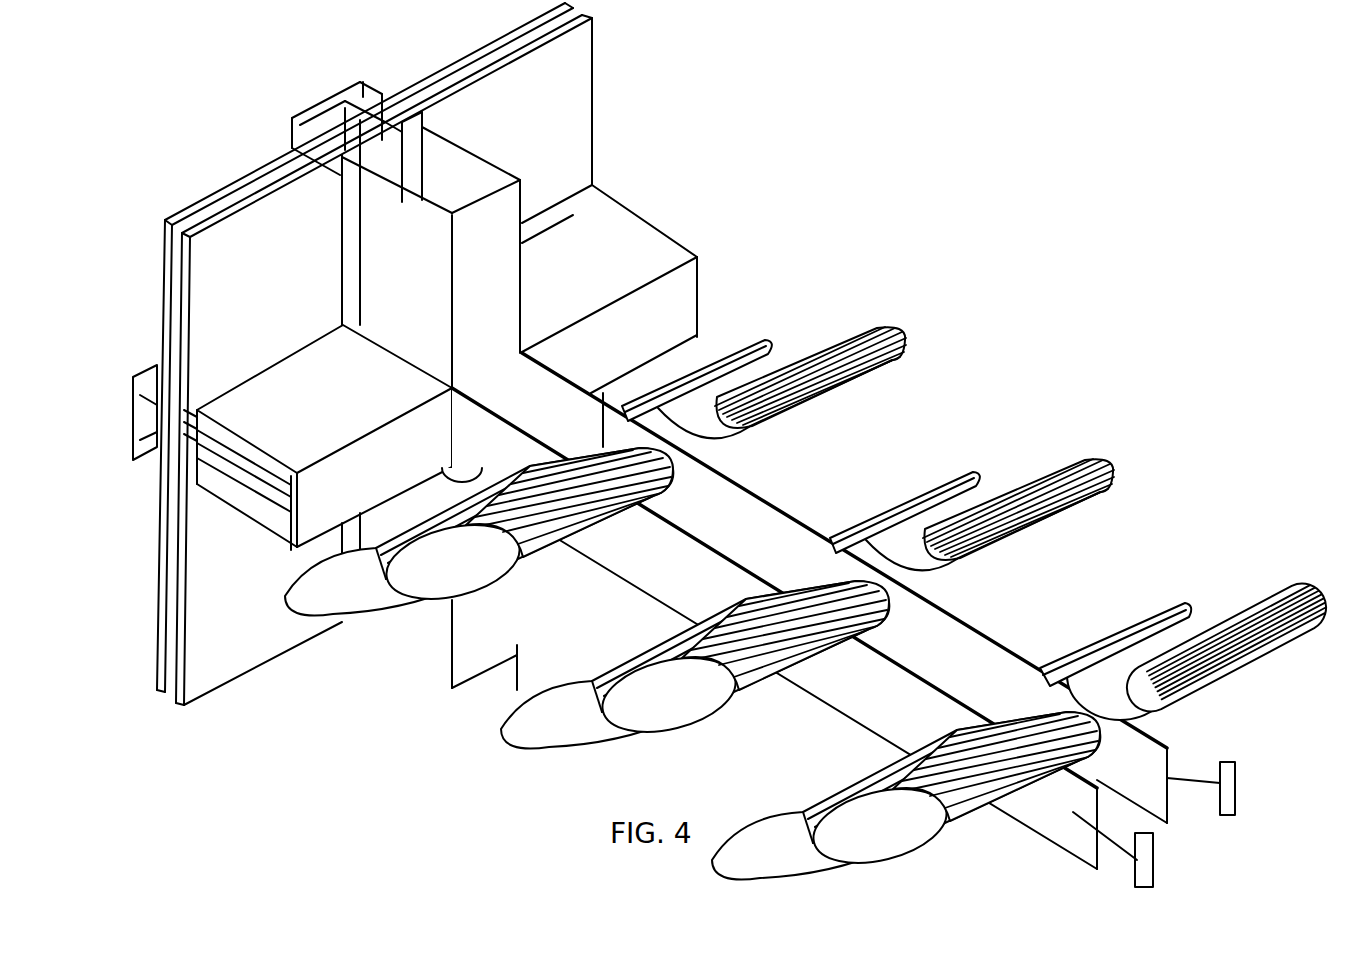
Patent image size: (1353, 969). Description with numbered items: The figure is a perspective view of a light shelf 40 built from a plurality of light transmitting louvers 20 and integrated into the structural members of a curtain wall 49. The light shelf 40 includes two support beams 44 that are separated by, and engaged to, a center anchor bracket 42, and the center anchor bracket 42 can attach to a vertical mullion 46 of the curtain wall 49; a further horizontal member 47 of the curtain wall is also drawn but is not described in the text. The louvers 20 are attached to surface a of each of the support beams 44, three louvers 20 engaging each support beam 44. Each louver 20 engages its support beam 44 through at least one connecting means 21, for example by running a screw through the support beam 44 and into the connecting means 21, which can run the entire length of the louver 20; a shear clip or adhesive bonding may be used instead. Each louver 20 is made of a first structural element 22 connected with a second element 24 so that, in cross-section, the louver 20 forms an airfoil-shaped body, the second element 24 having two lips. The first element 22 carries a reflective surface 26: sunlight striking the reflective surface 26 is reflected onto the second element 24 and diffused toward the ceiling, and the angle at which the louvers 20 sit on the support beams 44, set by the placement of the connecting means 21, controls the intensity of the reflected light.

The light transmitting louver 20 is at (790, 343).
The connecting means 21 is at (804, 814).
The first structural element 22 is at (479, 578).
The second element 24 is at (569, 545).
The reflective surface 26 is at (453, 597).
The light shelf 40 is at (805, 510).
The center anchor bracket 42 is at (603, 393).
The support beam 44 is at (913, 663).
The vertical mullion 46 is at (500, 290).
The horizontal transom 47 is at (315, 500).
The curtain wall 49 is at (560, 100).